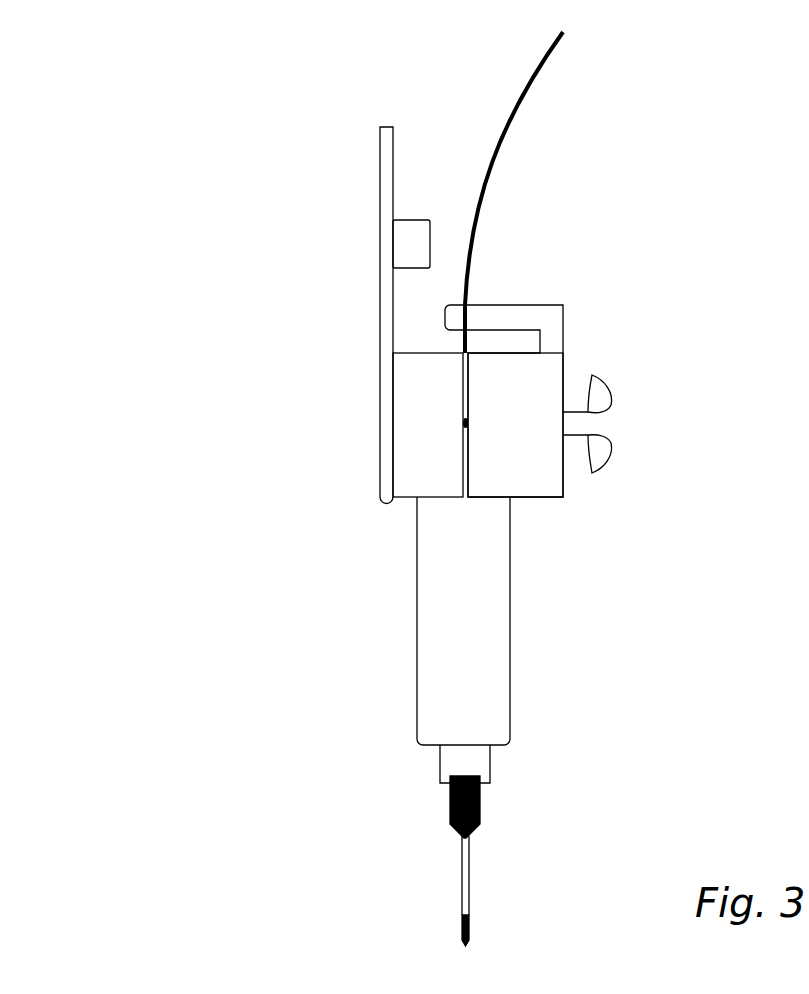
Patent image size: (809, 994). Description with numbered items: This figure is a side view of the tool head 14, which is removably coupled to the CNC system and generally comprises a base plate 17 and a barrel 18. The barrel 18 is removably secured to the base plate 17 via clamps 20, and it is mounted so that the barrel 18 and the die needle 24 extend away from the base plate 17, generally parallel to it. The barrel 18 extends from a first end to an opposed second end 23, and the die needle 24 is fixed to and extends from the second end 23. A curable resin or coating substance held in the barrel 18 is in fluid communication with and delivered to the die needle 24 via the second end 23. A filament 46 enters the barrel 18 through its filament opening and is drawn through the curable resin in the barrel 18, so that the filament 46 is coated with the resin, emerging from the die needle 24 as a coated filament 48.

The tool head 14 is at (178, 362).
The base plate 17 is at (390, 173).
The filament 46 is at (494, 158).
The clamps 20 is at (510, 458).
The barrel 18 is at (490, 640).
The second end 23 is at (448, 783).
The die needle 24 is at (470, 876).
The coated filament 48 is at (462, 931).